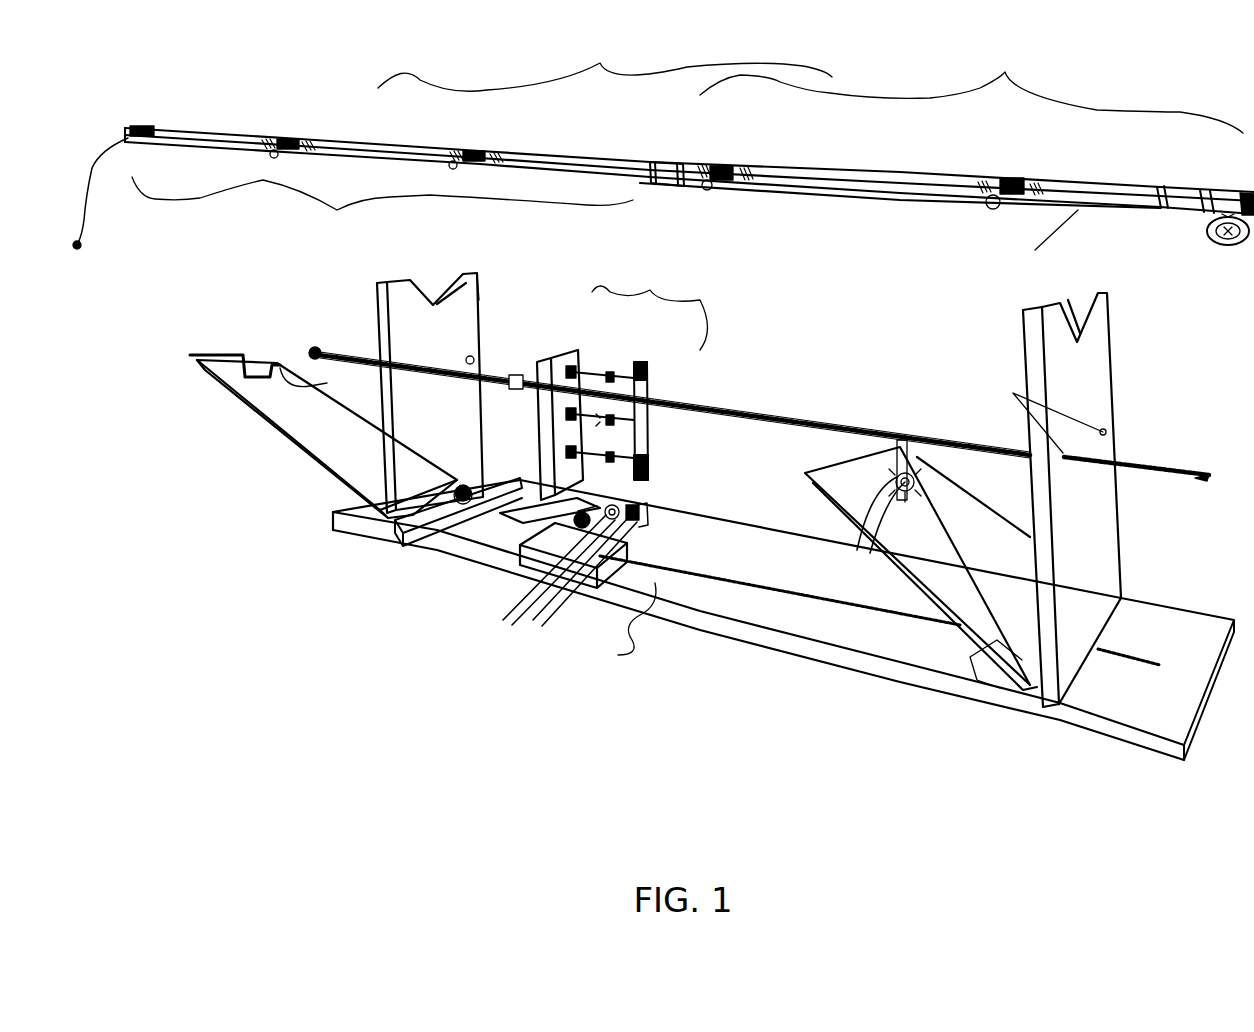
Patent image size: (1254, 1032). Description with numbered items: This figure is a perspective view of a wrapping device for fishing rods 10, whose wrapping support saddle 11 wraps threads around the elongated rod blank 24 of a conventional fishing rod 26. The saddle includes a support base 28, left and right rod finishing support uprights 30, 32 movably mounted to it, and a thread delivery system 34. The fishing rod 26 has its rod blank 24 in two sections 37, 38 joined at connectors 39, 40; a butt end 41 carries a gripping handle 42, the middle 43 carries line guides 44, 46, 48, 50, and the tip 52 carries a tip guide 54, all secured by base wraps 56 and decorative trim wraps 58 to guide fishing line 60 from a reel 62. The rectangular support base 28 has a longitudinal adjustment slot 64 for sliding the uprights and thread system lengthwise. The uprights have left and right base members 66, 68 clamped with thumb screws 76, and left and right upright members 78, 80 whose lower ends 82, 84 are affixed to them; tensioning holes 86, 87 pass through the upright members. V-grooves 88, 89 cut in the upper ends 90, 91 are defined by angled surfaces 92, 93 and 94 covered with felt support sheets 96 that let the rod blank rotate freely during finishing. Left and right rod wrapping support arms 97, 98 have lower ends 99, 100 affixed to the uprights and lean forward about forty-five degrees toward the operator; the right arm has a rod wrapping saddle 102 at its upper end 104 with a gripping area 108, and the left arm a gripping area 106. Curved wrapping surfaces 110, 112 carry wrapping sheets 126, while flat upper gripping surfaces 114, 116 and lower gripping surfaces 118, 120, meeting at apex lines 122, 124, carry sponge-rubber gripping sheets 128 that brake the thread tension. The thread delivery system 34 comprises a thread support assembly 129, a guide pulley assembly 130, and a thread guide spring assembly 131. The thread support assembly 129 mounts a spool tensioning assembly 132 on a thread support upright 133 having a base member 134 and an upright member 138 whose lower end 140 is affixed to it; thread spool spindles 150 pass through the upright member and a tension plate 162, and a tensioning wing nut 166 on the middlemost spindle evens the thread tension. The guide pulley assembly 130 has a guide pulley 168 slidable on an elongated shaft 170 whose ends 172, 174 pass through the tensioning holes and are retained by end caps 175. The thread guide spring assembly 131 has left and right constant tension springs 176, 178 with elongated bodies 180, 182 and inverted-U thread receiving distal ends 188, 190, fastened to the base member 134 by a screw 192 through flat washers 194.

The wrapping device for fishing rods 10 is at (1006, 238).
The wrapping support saddle 11 is at (887, 281).
The rod blank 24 is at (960, 168).
The fishing rod 26 is at (345, 113).
The support base 28 is at (788, 678).
The left rod finishing support upright 30 is at (523, 258).
The right rod finishing support upright 32 is at (1146, 263).
The thread delivery system 34 is at (650, 307).
The rod blank section 37 is at (971, 89).
The rod blank section 38 is at (382, 209).
The connector 39 is at (683, 162).
The connector 40 is at (653, 160).
The butt end 41 is at (1158, 187).
The gripping handle 42 is at (1202, 190).
The middle 43 is at (605, 64).
The line guide 44 is at (987, 205).
The line guide 46 is at (706, 190).
The line guide 48 is at (456, 168).
The line guide 50 is at (276, 157).
The tip 52 is at (160, 129).
The tip guide 54 is at (128, 143).
The base wraps 56 is at (143, 126).
The decorative trim wraps 58 is at (266, 139).
The fishing line 60 is at (1042, 244).
The reel 62 is at (1227, 247).
The longitudinal adjustment slot 64 is at (736, 556).
The left base member 66 is at (433, 556).
The right base member 68 is at (1001, 702).
The thumb screws 76 is at (465, 484).
The left upright member 78 is at (363, 304).
The right upright member 80 is at (1118, 367).
The lower end 82 is at (390, 540).
The lower end 84 is at (1050, 712).
The tensioning hole 86 is at (403, 363).
The tensioning hole 87 is at (1040, 414).
The left V-groove 88 is at (447, 264).
The right V-groove 89 is at (1078, 289).
The upper end 90 is at (483, 290).
The upper end 91 is at (1108, 304).
The angled surface 92 is at (286, 467).
The angled surface 93 is at (803, 463).
The angled surface 94 is at (335, 522).
The support sheets 96 is at (985, 666).
The left rod wrapping support arm 97 is at (262, 330).
The right rod wrapping support arm 98 is at (908, 472).
The lower end 99 is at (222, 372).
The lower end 100 is at (830, 480).
The right rod wrapping saddle 102 is at (252, 355).
The upper end of right rod wrapping support arm 104 is at (896, 455).
The left gripping area 106 is at (252, 378).
The right gripping area 108 is at (917, 517).
The left wrapping surface 110 is at (243, 381).
The right wrapping surface 112 is at (880, 500).
The left upper gripping surface 114 is at (268, 362).
The right upper gripping surface 116 is at (917, 483).
The left lower gripping surface 118 is at (272, 381).
The right lower gripping surface 120 is at (883, 523).
The apex line 122 is at (327, 383).
The apex line 124 is at (923, 500).
The wrapping sheets 126 is at (215, 366).
The gripping sheets 128 is at (277, 390).
The thread support assembly 129 is at (715, 413).
The guide pulley assembly 130 is at (543, 338).
The thread guide spring assembly 131 is at (614, 629).
The spool tensioning assembly 132 is at (619, 354).
The thread support upright 133 is at (512, 563).
The base member 134 is at (534, 573).
The upright member 138 is at (558, 346).
The lower end 140 is at (545, 497).
The thread spool spindles 150 is at (650, 427).
The tension plate 162 is at (662, 399).
The tensioning wing nut 166 is at (652, 442).
The guide pulley 168 is at (516, 375).
The elongated shaft 170 is at (806, 418).
The shaft end 172 is at (321, 352).
The shaft end 174 is at (1160, 466).
The end caps 175 is at (1207, 481).
The left constant tension spring 176 is at (498, 644).
The right constant tension spring 178 is at (531, 652).
The elongated body 180 is at (505, 620).
The elongated body 182 is at (558, 598).
The thread receiving distal end 188 is at (510, 642).
The thread receiving distal end 190 is at (540, 632).
The screw 192 is at (650, 512).
The flat washers 194 is at (640, 520).